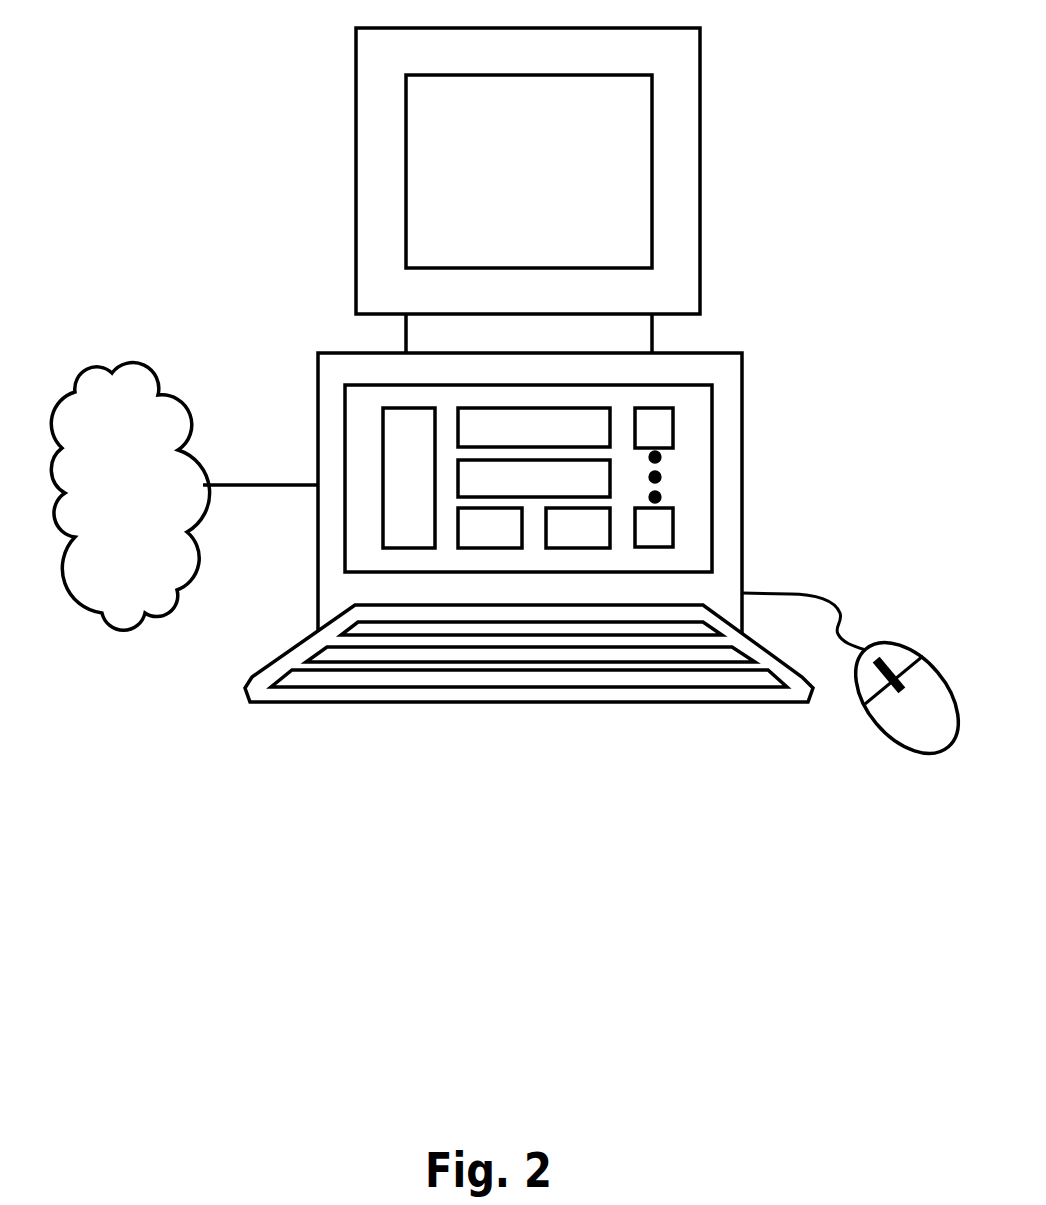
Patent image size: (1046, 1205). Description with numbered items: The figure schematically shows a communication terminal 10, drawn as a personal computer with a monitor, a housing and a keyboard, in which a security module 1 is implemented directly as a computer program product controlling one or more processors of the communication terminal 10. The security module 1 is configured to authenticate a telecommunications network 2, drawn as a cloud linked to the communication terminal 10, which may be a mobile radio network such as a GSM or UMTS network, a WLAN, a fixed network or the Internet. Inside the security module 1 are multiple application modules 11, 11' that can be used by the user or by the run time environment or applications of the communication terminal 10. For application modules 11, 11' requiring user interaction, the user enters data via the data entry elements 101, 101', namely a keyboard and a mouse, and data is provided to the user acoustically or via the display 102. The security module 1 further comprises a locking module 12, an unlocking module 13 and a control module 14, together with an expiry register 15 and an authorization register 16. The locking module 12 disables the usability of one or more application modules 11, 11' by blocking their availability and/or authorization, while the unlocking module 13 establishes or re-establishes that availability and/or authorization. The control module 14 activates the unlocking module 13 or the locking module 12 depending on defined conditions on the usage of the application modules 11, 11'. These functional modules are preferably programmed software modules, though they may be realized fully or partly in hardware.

The security module 1 is at (720, 463).
The telecommunications network 2 is at (118, 622).
The communication terminal 10 is at (328, 583).
The application module 11 is at (731, 410).
The application module 11' is at (735, 536).
The locking module 12 is at (598, 420).
The unlocking module 13 is at (537, 482).
The control module 14 is at (388, 443).
The expiry register 15 is at (492, 537).
The authorization register 16 is at (579, 537).
The data entry element 101 is at (506, 701).
The data entry element 101' is at (860, 719).
The display 102 is at (632, 170).